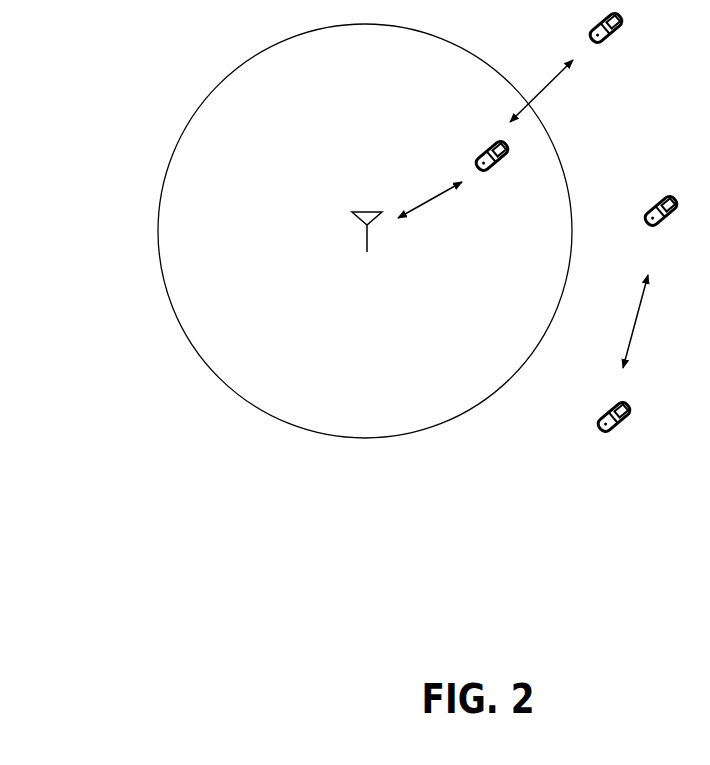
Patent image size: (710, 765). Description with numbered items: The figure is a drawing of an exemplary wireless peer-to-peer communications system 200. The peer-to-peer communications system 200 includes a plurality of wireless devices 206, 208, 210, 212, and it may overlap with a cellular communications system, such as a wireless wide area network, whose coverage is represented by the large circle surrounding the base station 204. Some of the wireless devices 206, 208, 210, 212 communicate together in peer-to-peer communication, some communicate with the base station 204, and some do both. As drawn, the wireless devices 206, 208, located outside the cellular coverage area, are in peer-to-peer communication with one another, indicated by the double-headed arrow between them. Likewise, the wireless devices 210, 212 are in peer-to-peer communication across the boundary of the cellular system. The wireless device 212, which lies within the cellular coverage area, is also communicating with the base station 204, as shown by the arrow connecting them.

The peer-to-peer communications system 200 is at (117, 48).
The base station 204 is at (367, 247).
The wireless device 206 is at (662, 227).
The wireless device 208 is at (615, 433).
The wireless device 210 is at (607, 44).
The wireless device 212 is at (493, 172).